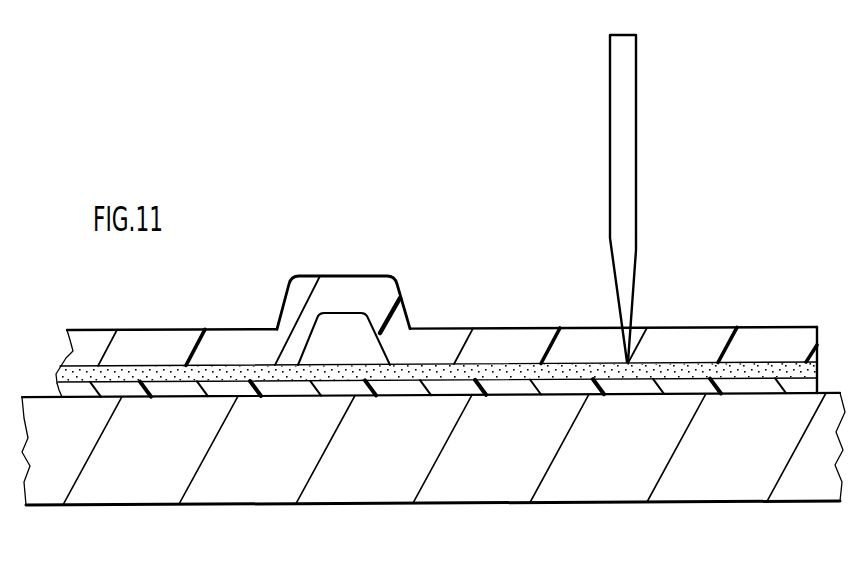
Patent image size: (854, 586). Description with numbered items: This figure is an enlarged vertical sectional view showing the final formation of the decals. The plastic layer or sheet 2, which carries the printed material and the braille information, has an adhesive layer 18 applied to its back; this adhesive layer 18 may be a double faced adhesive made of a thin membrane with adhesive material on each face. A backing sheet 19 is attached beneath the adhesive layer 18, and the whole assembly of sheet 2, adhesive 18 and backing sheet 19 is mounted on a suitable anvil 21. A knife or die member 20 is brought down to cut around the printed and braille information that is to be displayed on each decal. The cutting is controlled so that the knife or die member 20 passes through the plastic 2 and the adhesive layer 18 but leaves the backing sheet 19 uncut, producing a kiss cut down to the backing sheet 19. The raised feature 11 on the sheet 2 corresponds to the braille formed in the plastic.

The plastic sheet 2 is at (704, 318).
The wiring line 11 is at (352, 286).
The adhesive layer 18 is at (498, 366).
The backing sheet 19 is at (507, 388).
The knife or die member 20 is at (637, 175).
The anvil 21 is at (335, 492).